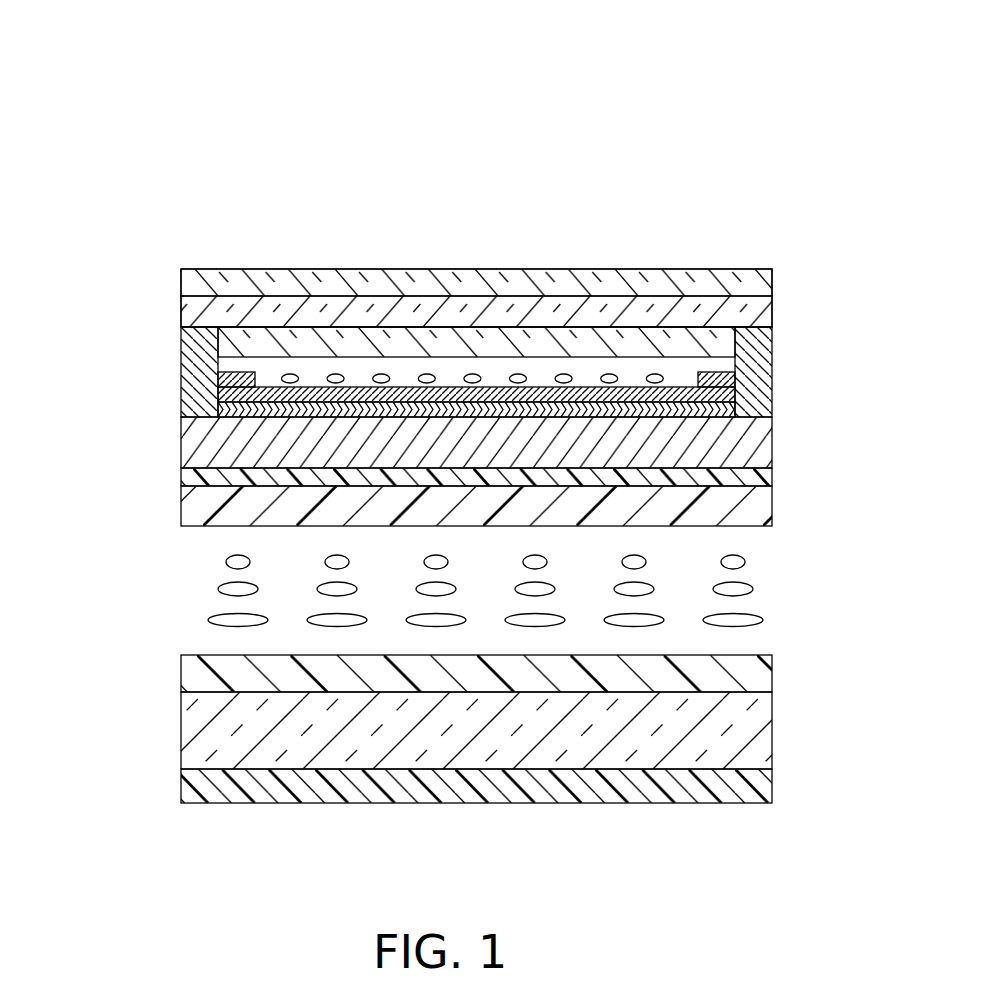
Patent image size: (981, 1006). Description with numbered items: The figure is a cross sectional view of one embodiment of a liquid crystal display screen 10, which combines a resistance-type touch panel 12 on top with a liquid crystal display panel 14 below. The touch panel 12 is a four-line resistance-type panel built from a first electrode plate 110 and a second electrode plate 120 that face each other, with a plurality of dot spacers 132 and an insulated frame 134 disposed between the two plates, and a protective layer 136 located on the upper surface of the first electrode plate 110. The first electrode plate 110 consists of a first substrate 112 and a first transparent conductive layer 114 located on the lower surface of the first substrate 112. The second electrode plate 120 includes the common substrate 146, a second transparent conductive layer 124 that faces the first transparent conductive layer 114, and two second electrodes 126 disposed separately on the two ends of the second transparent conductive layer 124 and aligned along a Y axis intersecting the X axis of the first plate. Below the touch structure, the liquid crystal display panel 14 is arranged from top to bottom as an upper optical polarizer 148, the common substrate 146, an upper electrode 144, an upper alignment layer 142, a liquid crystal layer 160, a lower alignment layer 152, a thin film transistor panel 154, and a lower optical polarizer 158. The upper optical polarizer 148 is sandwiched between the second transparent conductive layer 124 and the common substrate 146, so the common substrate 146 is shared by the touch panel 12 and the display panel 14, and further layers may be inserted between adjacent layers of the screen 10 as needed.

The liquid crystal display screen 10 is at (484, 50).
The touch panel 12 is at (67, 272).
The liquid crystal display panel 14 is at (866, 385).
The first electrode plate 110 is at (120, 272).
The first substrate 112 is at (200, 290).
The first transparent conductive layer 114 is at (242, 318).
The second electrode plate 120 is at (120, 352).
The second transparent conductive layer 124 is at (215, 388).
The second electrodes 126 is at (218, 372).
The dot spacers 132 is at (280, 378).
The insulated frame 134 is at (235, 350).
The protective layer 136 is at (760, 285).
The upper alignment layer 142 is at (750, 505).
The upper electrode 144 is at (758, 477).
The common substrate 146 is at (195, 420).
The upper optical polarizer 148 is at (722, 412).
The lower alignment layer 152 is at (748, 677).
The thin film transistor panel 154 is at (745, 727).
The lower optical polarizer 158 is at (750, 791).
The liquid crystal layer 160 is at (760, 578).